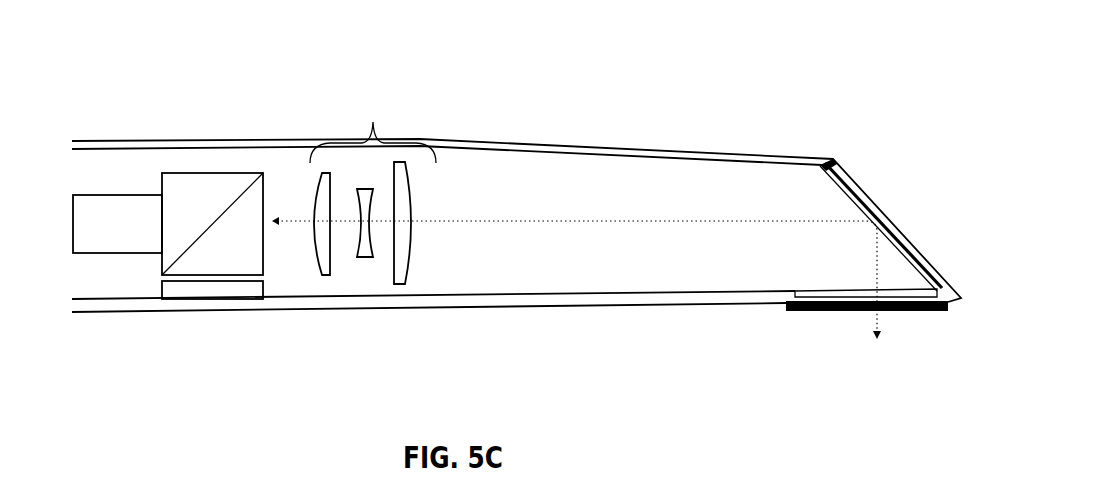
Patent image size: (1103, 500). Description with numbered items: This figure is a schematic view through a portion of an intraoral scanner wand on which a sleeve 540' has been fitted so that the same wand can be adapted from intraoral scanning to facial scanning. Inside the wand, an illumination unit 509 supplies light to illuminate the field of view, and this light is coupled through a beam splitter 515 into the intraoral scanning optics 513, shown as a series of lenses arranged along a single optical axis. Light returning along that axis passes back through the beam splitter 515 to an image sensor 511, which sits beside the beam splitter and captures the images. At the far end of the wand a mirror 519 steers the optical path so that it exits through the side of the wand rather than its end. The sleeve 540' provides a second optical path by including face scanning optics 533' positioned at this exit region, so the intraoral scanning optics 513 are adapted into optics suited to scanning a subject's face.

The illumination unit 509 is at (85, 243).
The image sensor 511 is at (212, 290).
The intraoral scanning optics 513 is at (378, 156).
The beam splitter 515 is at (188, 185).
The mirror 519 is at (837, 172).
The face scanning optics 533' is at (851, 370).
The sleeve 540' is at (516, 170).